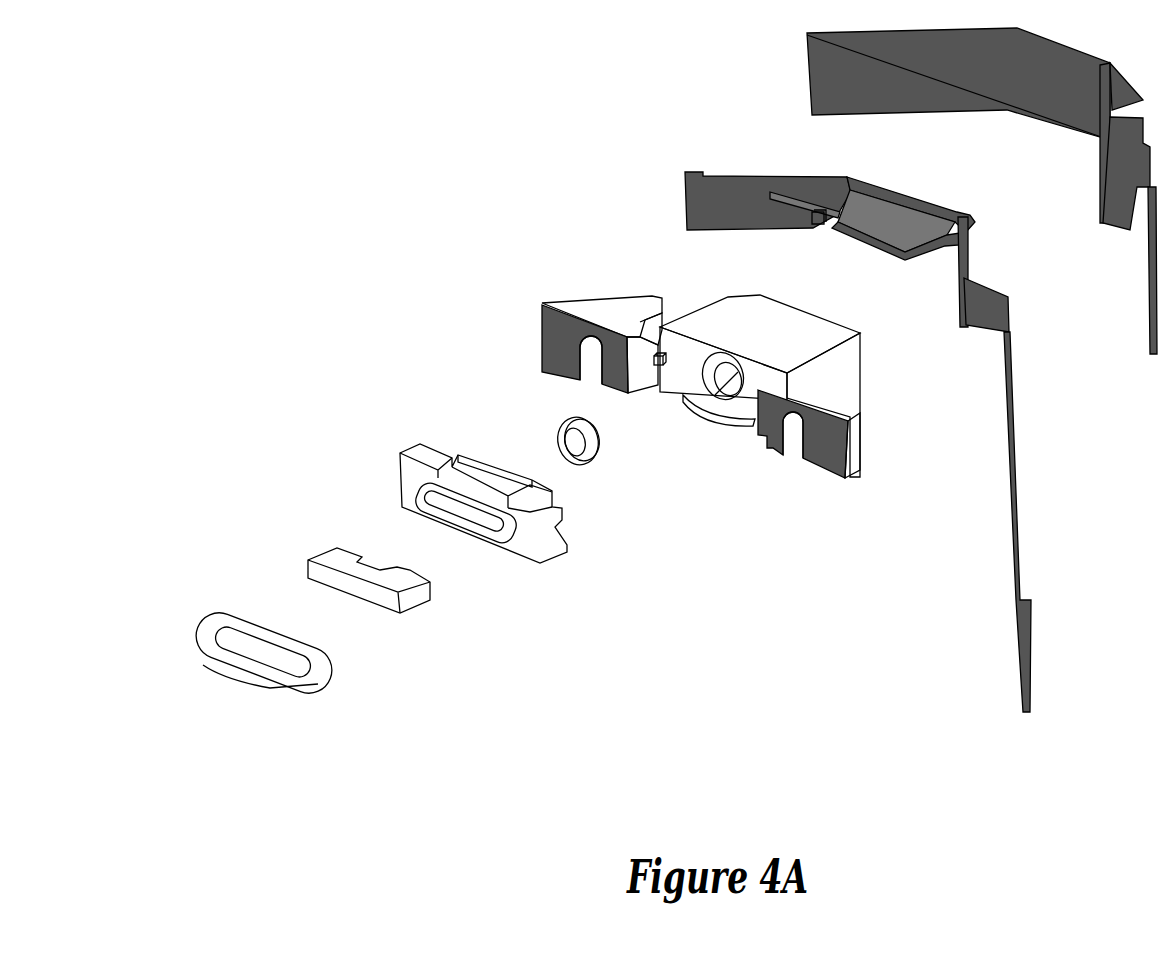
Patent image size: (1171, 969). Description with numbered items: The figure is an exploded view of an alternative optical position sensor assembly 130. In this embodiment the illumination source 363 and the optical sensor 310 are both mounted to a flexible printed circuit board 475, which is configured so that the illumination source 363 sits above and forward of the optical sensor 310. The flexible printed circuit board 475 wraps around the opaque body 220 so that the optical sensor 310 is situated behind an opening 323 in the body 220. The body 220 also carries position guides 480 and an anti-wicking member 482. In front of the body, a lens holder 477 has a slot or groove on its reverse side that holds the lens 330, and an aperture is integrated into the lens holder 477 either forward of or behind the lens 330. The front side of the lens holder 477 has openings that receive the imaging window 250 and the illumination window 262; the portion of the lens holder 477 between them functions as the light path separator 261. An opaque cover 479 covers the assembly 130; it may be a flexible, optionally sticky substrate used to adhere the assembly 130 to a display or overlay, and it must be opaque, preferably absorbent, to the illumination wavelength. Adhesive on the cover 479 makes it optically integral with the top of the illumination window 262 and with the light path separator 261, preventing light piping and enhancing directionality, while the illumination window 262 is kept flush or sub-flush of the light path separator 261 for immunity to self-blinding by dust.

The optical position sensor assembly 130 is at (336, 130).
The opaque body 220 is at (615, 305).
The imaging window 250 is at (200, 617).
The light path separator 261 is at (466, 496).
The illumination window 262 is at (308, 560).
The optical sensor 310 is at (880, 187).
The opening 323 is at (727, 355).
The lens 330 is at (556, 425).
The illumination source 363 is at (812, 213).
The flexible printed circuit board 475 is at (1017, 406).
The lens holder 477 is at (465, 497).
The opaque cover 479 is at (1066, 46).
The position guides 480 is at (596, 390).
The anti-wicking member 482 is at (715, 420).